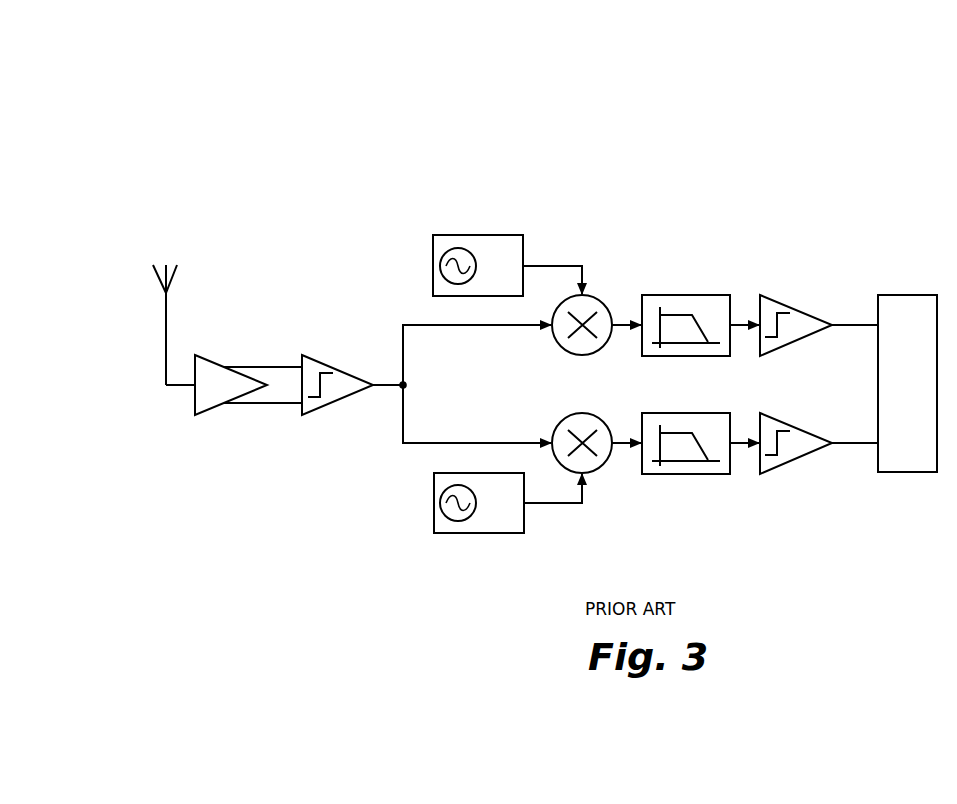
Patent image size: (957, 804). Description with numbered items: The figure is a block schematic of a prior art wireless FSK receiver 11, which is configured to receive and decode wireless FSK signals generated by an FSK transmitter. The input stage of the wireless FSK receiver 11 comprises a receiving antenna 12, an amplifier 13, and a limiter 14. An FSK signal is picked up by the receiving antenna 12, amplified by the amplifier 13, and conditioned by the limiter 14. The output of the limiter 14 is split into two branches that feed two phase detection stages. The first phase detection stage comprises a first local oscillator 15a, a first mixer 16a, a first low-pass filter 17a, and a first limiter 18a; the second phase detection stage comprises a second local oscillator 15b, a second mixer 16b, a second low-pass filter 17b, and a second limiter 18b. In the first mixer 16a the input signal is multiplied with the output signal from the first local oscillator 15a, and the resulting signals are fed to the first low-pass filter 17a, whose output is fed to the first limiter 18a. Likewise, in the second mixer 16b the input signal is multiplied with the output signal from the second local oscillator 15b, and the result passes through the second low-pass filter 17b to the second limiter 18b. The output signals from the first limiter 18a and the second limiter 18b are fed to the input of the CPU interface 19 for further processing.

The wireless FSK receiver 11 is at (778, 208).
The receiving antenna 12 is at (163, 313).
The amplifier 13 is at (212, 412).
The limiter 14 is at (333, 362).
The first local oscillator 15a is at (475, 235).
The second local oscillator 15b is at (482, 533).
The first mixer 16a is at (600, 298).
The second mixer 16b is at (595, 470).
The first low-pass filter 17a is at (683, 295).
The second low-pass filter 17b is at (693, 474).
The first limiter 18a is at (790, 303).
The second limiter 18b is at (790, 465).
The CPU interface 19 is at (903, 473).